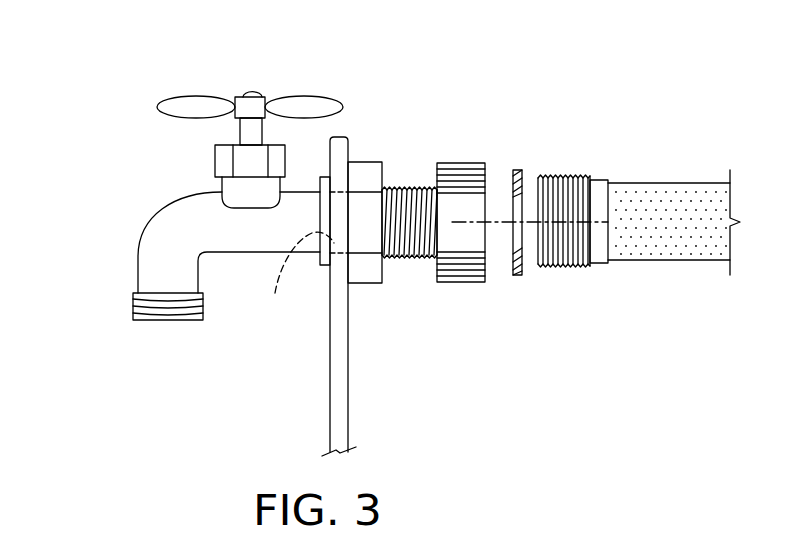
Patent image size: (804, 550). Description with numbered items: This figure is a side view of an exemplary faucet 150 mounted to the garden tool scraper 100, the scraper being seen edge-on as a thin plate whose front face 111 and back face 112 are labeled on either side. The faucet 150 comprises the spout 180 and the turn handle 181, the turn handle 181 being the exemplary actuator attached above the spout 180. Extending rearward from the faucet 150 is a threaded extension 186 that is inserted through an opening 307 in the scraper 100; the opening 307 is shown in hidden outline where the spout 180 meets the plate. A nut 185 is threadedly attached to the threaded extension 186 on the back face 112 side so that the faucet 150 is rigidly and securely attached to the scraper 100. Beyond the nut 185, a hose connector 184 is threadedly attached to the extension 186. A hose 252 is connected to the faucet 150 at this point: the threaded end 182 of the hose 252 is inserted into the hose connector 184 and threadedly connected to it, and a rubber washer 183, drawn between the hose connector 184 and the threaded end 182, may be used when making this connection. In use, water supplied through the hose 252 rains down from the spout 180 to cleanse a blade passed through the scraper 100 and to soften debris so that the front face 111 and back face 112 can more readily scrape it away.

The garden tool scraper 100 is at (347, 135).
The front face 111 is at (330, 396).
The back face 112 is at (348, 396).
The faucet 150 is at (127, 222).
The spout 180 is at (191, 212).
The turn handle 181 is at (187, 106).
The threaded end 182 is at (568, 176).
The rubber washer 183 is at (517, 168).
The hose connector 184 is at (459, 166).
The nut 185 is at (367, 166).
The threaded extension 186 is at (408, 186).
The hose 252 is at (668, 188).
The opening 307 is at (294, 279).